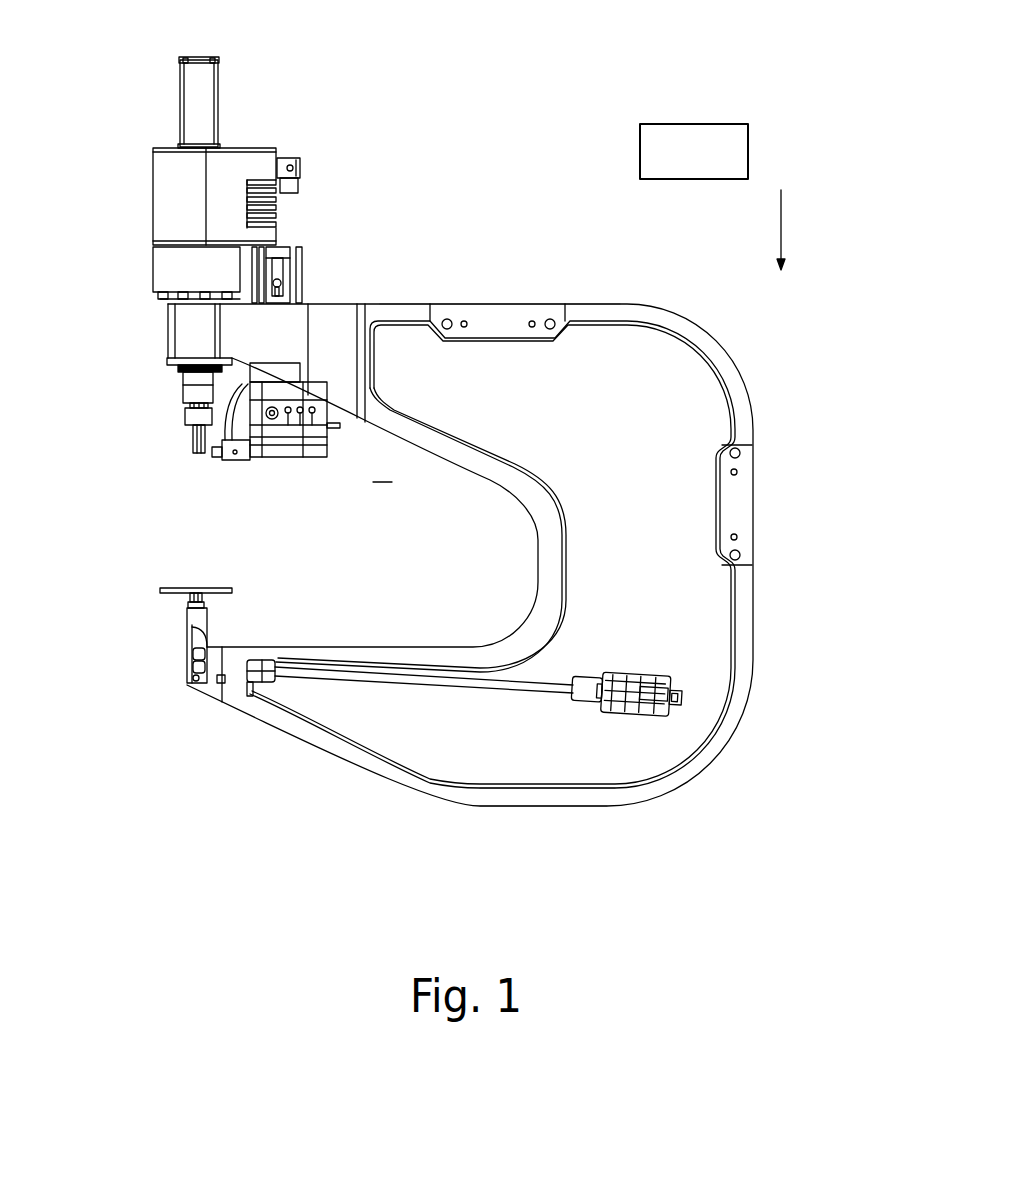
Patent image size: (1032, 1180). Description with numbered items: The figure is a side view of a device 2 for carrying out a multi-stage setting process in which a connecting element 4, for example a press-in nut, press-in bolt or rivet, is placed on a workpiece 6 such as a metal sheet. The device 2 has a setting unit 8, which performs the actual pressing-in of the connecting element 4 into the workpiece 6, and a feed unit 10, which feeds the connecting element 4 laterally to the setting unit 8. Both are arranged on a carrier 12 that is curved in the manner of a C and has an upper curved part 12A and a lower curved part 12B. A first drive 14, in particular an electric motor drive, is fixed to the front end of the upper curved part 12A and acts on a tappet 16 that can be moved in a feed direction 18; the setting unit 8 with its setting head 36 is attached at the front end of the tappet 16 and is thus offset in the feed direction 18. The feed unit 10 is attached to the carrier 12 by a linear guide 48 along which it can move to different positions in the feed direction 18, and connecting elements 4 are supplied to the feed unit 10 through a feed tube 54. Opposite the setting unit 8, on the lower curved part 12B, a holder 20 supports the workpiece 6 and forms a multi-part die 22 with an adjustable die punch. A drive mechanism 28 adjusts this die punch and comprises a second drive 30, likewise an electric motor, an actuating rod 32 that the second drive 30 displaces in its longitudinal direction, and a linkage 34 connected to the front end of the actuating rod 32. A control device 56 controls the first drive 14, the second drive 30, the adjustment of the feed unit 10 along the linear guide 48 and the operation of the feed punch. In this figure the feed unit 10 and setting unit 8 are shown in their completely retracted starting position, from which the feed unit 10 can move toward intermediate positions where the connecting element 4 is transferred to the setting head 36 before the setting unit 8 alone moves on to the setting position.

The device 2 is at (474, 490).
The connecting element 4 is at (153, 468).
The workpiece 6 is at (185, 590).
The setting unit 8 is at (163, 419).
The feed unit 10 is at (292, 457).
The carrier 12 is at (460, 543).
The upper curved part 12A is at (495, 363).
The lower curved part 12B is at (435, 760).
The first drive 14 is at (163, 175).
The tappet 16 is at (188, 93).
The feed direction 18 is at (781, 230).
The holder 20 is at (138, 638).
The multi-part die 22 is at (188, 597).
The drive mechanism 28 is at (419, 761).
The second drive 30 is at (647, 712).
The actuating rod 32 is at (327, 682).
The linkage 34 is at (252, 695).
The setting head 36 is at (190, 433).
The linear guide 48 is at (302, 282).
The feed tube 54 is at (257, 440).
The control device 56 is at (745, 148).